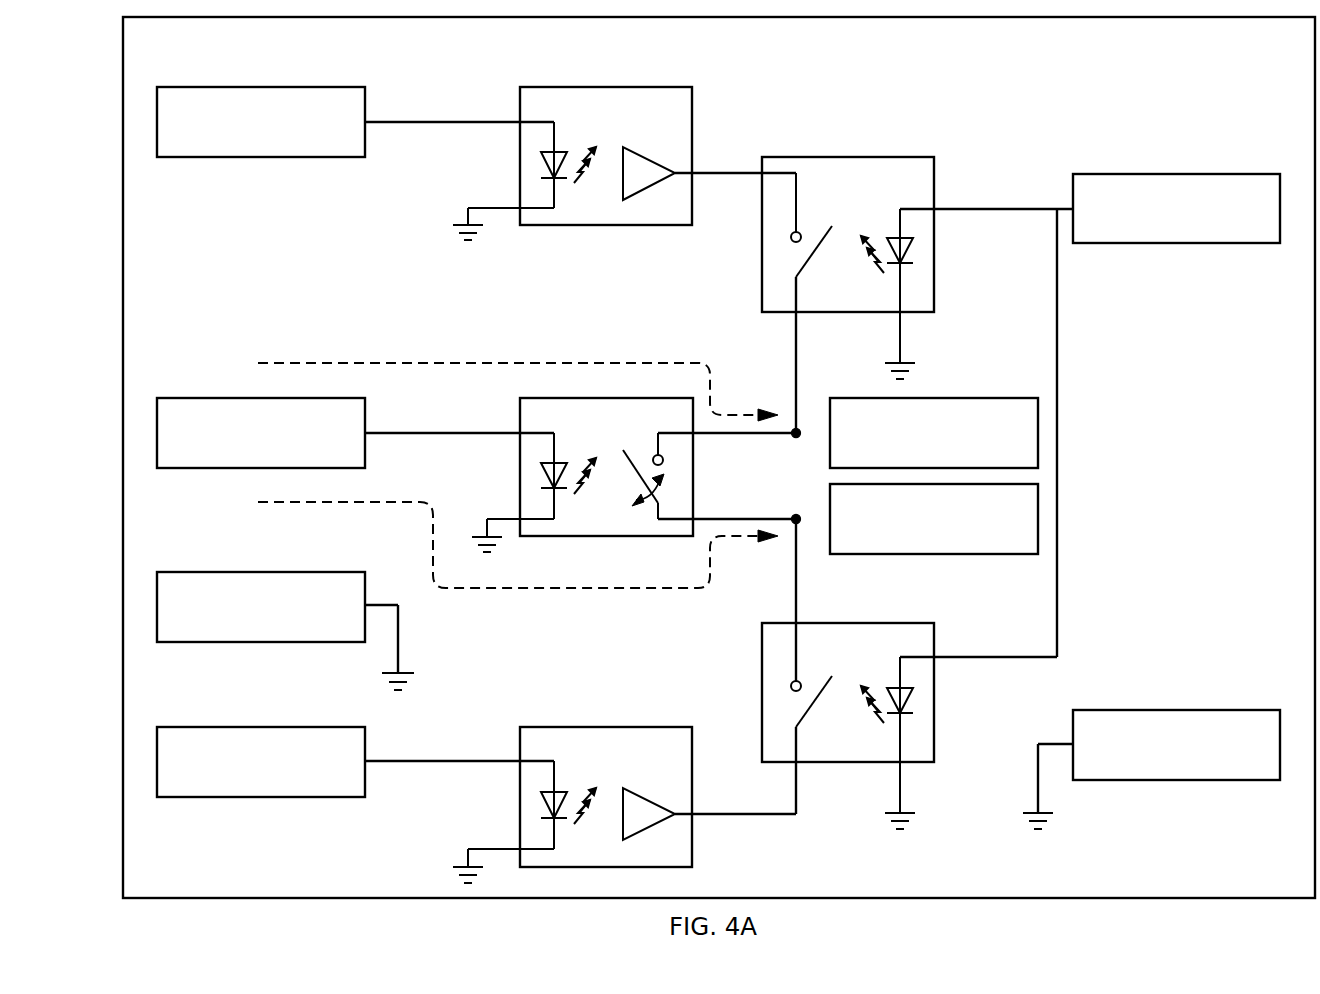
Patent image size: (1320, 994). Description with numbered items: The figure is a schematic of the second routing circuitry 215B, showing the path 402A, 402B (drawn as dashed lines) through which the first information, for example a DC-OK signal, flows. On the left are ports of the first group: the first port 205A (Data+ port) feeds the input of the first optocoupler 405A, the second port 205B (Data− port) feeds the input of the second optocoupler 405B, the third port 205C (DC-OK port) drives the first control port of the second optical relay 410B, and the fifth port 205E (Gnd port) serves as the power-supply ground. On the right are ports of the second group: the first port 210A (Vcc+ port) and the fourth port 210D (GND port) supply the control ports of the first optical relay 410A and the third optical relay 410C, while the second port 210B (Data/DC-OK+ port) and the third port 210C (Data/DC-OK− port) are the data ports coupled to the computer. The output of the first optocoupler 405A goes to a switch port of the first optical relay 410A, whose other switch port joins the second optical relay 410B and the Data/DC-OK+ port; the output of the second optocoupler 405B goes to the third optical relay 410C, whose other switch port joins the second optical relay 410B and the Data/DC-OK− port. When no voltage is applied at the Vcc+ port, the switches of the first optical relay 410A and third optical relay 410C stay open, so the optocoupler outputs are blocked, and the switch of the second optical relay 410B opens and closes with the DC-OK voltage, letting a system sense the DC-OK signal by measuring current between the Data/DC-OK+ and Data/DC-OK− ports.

The second routing circuitry 215B is at (694, 79).
The first port 205A is at (234, 145).
The second port 205B is at (237, 785).
The third port 205C is at (236, 456).
The fifth port 205E is at (237, 630).
The first port 210A is at (1152, 231).
The second port 210B is at (910, 456).
The third port 210C is at (910, 542).
The fourth port 210D is at (1152, 768).
The path 402A is at (585, 363).
The path 402B is at (600, 588).
The first optocoupler 405A is at (582, 122).
The second optocoupler 405B is at (582, 762).
The first optical relay 410A is at (823, 191).
The second optical relay 410B is at (582, 433).
The third optical relay 410C is at (823, 657).